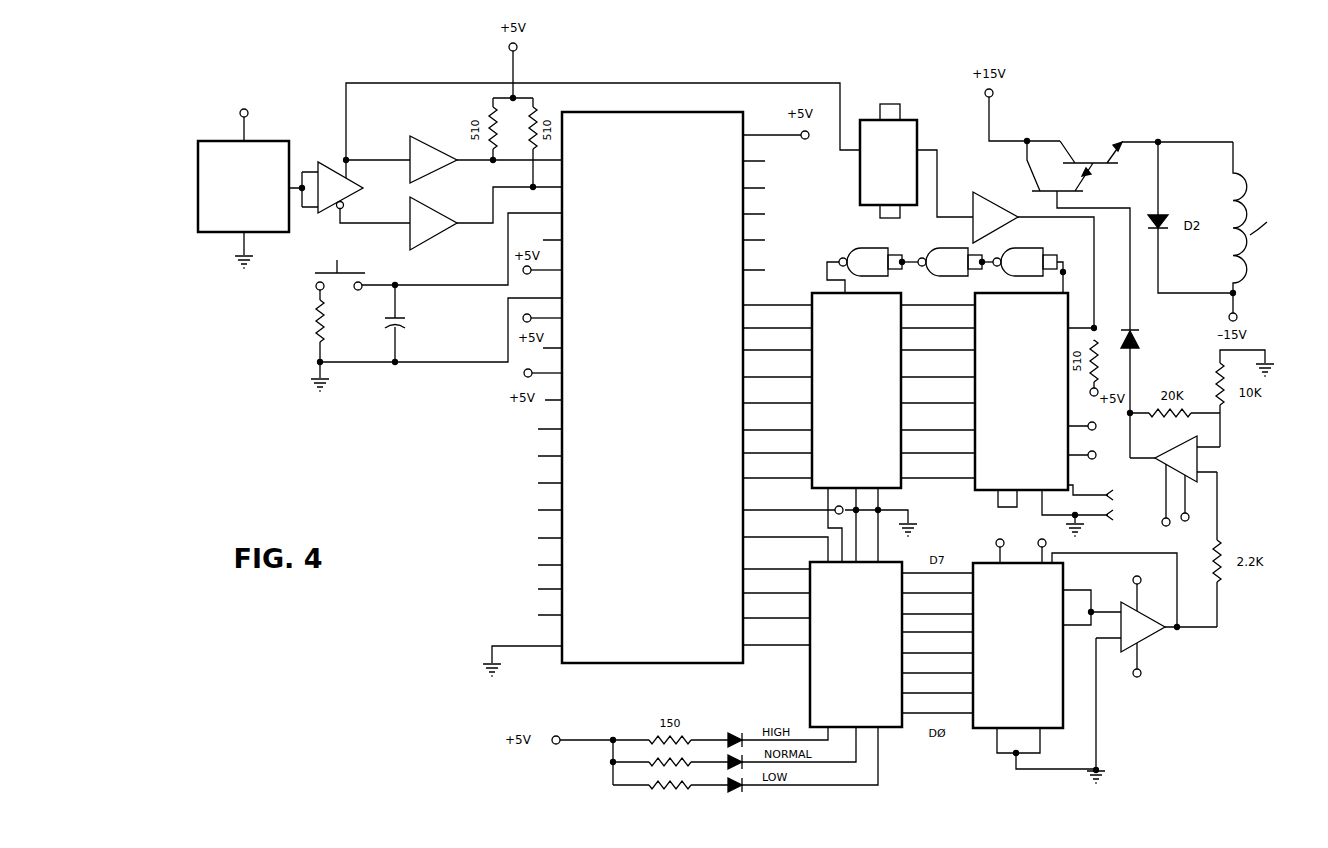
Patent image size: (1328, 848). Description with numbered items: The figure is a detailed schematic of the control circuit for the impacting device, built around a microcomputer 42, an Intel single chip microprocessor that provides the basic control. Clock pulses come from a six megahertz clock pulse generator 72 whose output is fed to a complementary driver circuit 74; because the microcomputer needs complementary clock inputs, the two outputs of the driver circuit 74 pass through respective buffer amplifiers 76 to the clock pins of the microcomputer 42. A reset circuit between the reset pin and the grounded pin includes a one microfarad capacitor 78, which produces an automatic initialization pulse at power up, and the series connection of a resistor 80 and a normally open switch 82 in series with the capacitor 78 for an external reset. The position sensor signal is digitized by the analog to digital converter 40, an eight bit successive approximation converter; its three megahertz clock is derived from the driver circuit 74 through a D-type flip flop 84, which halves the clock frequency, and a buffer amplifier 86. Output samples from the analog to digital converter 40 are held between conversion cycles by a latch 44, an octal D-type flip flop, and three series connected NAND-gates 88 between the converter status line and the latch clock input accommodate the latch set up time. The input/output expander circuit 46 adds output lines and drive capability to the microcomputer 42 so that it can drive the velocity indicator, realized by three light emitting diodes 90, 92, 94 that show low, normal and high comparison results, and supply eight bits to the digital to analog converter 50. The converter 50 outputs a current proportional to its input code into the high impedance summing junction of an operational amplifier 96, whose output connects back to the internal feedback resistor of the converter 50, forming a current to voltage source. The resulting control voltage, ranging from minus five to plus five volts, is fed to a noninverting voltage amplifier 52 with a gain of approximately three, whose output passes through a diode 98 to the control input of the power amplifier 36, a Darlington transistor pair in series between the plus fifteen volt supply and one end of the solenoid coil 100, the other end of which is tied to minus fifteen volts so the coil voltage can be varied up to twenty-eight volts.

The power amplifier 36 is at (1097, 153).
The analog to digital converter 40 is at (1010, 434).
The microcomputer 42 is at (636, 391).
The latch 44 is at (843, 433).
The input/output expander circuit 46 is at (838, 683).
The digital to analog converter 50 is at (1010, 683).
The voltage amplifier 52 is at (1201, 460).
The clock pulse generator 72 is at (212, 157).
The complementary driver circuit 74 is at (341, 157).
The buffer amplifiers 76 is at (443, 141).
The capacitor 78 is at (405, 317).
The resistor 80 is at (325, 337).
The normally open switch 82 is at (344, 268).
The D-type flip flop 84 is at (913, 132).
The buffer amplifier 86 is at (985, 192).
The NAND-gates 88 is at (863, 255).
The light emitting diode 90 is at (730, 783).
The light emitting diode 92 is at (734, 760).
The light emitting diode 94 is at (736, 738).
The operational amplifier 96 is at (1152, 633).
The diode 98 is at (1138, 330).
The coil 100 is at (1253, 188).